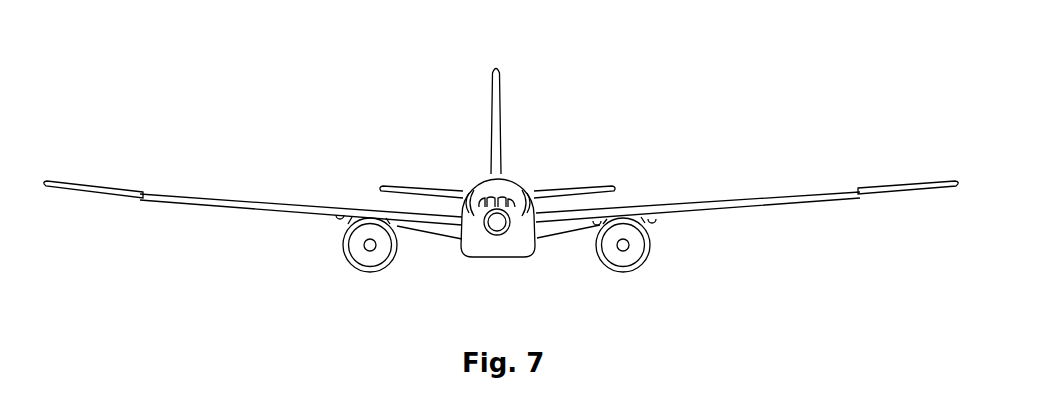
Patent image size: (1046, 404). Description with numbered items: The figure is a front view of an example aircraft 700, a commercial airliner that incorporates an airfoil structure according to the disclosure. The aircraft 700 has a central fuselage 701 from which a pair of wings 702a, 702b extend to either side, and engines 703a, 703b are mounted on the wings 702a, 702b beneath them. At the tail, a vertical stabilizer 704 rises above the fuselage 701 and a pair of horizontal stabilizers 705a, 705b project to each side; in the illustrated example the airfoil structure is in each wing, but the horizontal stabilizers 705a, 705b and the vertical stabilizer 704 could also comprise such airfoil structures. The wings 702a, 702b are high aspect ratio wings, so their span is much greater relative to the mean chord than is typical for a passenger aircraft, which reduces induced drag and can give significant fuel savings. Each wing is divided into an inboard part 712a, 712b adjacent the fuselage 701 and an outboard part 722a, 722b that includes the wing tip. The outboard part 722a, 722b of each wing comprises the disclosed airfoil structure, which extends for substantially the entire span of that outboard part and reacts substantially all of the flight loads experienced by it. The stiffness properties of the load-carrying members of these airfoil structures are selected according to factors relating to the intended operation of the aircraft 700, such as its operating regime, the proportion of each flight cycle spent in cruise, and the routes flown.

The aircraft 700 is at (230, 62).
The fuselage 701 is at (503, 187).
The wing 702a is at (797, 162).
The wing 702b is at (193, 168).
The engine 703a is at (642, 267).
The engine 703b is at (357, 268).
The vertical stabilizer 704 is at (502, 90).
The horizontal stabilizer 705a is at (583, 190).
The horizontal stabilizer 705b is at (412, 185).
The inboard part 712a is at (725, 201).
The inboard part 712b is at (292, 204).
The outboard part 722a is at (913, 184).
The outboard part 722b is at (91, 186).